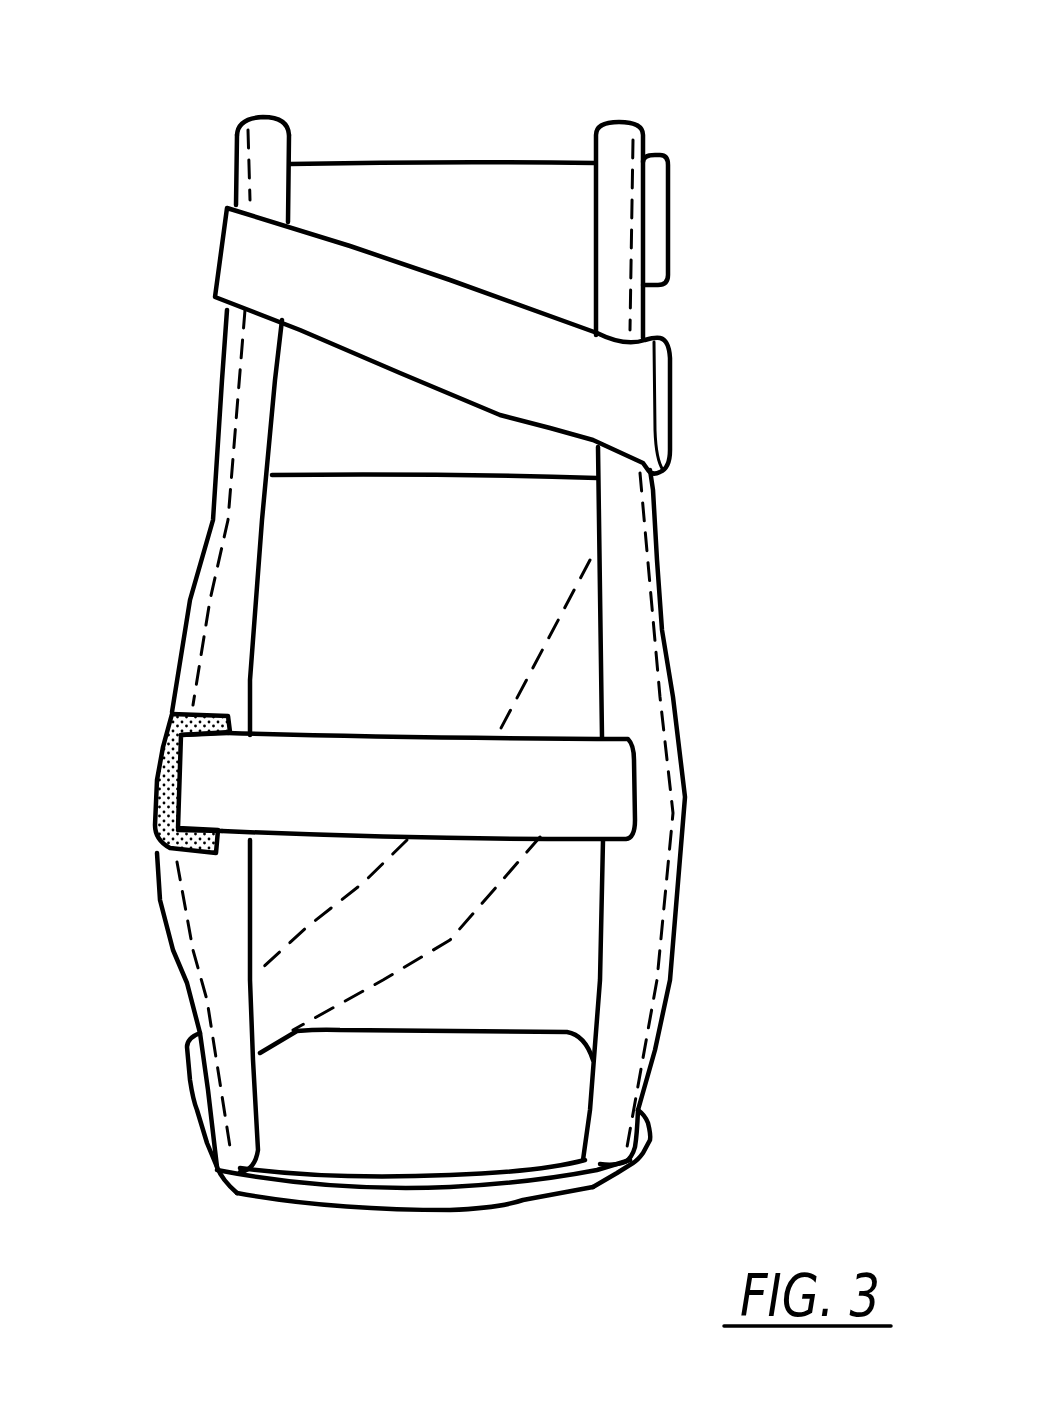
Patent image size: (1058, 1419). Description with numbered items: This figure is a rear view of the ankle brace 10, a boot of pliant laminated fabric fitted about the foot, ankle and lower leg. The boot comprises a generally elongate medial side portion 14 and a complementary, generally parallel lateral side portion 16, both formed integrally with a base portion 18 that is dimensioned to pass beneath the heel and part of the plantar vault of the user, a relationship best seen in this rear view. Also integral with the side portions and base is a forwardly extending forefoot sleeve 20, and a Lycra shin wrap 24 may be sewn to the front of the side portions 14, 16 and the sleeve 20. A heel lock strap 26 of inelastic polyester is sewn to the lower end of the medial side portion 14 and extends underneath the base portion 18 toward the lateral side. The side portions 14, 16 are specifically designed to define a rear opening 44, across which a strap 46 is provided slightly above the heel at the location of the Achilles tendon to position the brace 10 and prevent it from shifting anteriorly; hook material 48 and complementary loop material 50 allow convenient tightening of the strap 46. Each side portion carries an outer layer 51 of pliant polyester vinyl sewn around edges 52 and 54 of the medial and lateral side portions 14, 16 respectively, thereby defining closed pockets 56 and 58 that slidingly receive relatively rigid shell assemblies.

The ankle brace 10 is at (728, 136).
The medial side portion 14 is at (688, 767).
The lateral side portion 16 is at (187, 607).
The base portion 18 is at (407, 1175).
The forefoot sleeve 20 is at (487, 1000).
The shin wrap 24 is at (560, 943).
The heel lock strap 26 is at (323, 1210).
The rear opening 44 is at (478, 555).
The strap 46 is at (603, 757).
The hook material 48 is at (156, 838).
The loop material 50 is at (210, 760).
The outer layer 51 is at (683, 870).
The edge 52 is at (628, 124).
The edge 54 is at (247, 118).
The pocket 56 is at (620, 527).
The pocket 58 is at (257, 395).